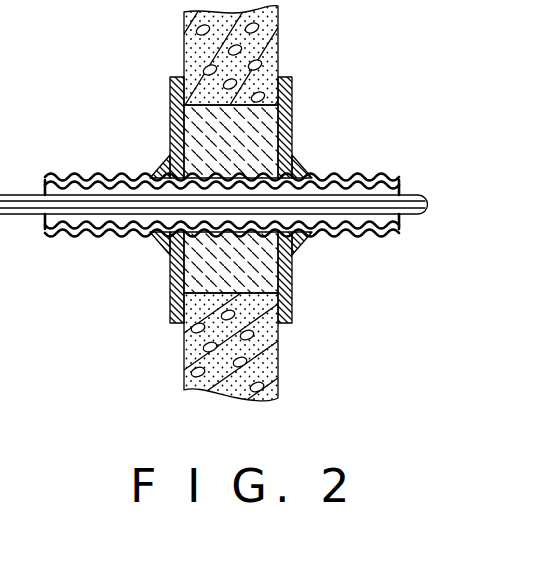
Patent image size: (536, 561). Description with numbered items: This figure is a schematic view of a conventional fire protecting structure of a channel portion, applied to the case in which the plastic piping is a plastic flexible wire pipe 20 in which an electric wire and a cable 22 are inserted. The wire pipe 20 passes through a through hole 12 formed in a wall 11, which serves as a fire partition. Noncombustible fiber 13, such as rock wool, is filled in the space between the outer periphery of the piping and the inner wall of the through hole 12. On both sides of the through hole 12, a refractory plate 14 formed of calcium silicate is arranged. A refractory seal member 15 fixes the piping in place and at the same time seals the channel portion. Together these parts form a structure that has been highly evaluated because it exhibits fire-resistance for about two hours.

The wall 11 is at (282, 47).
The through hole 12 is at (172, 299).
The noncombustible fiber 13 is at (292, 139).
The refractory plate 14 is at (170, 119).
The refractory seal member 15 is at (156, 246).
The plastic flexible wire pipe 20 is at (379, 238).
The cable 22 is at (412, 198).